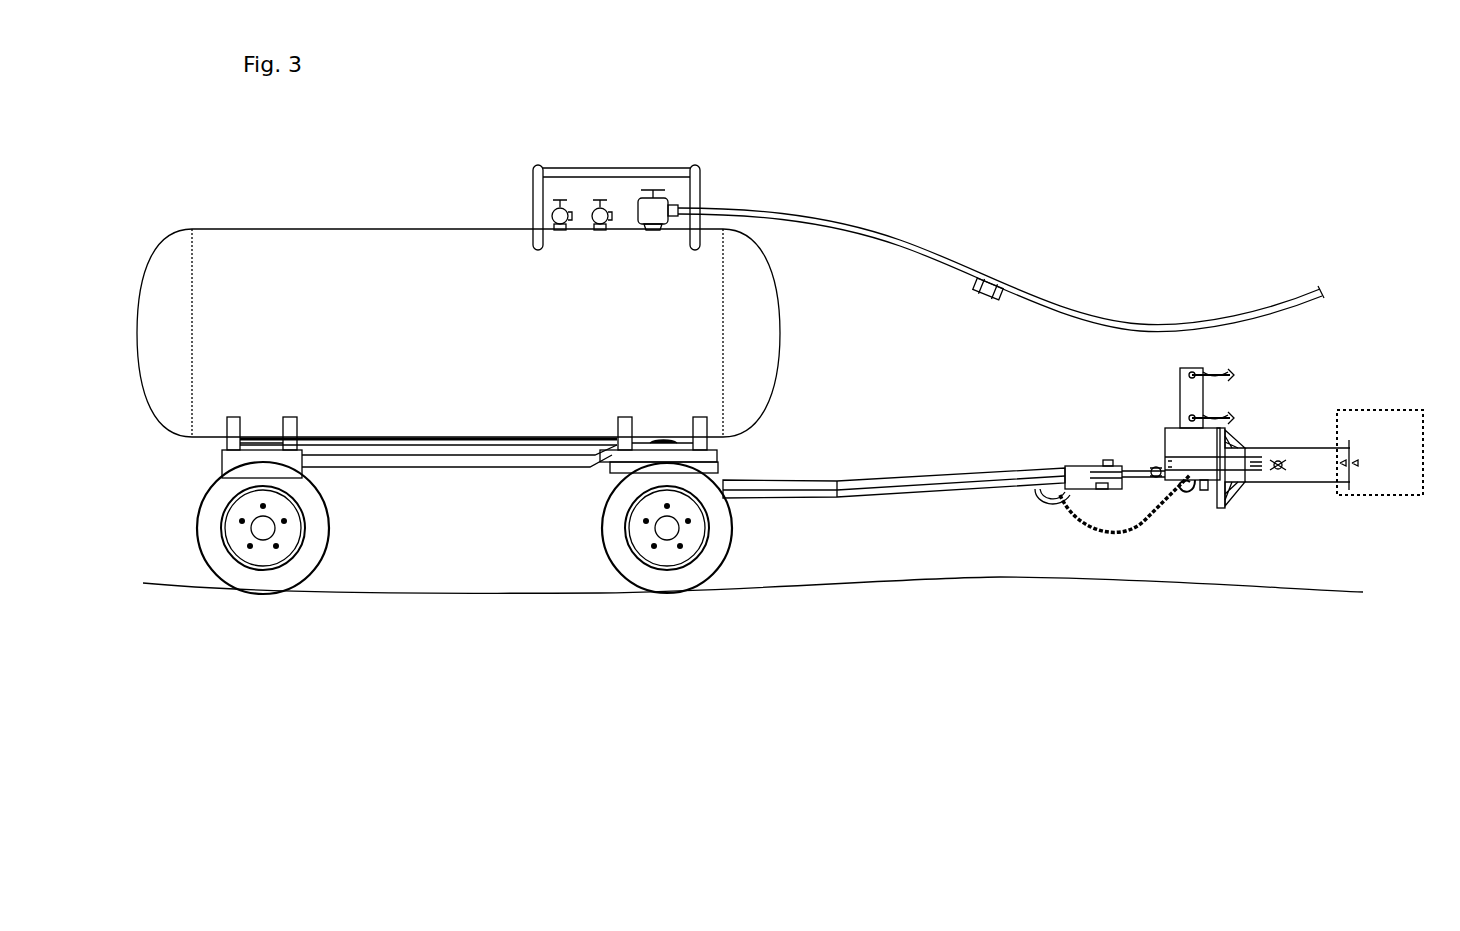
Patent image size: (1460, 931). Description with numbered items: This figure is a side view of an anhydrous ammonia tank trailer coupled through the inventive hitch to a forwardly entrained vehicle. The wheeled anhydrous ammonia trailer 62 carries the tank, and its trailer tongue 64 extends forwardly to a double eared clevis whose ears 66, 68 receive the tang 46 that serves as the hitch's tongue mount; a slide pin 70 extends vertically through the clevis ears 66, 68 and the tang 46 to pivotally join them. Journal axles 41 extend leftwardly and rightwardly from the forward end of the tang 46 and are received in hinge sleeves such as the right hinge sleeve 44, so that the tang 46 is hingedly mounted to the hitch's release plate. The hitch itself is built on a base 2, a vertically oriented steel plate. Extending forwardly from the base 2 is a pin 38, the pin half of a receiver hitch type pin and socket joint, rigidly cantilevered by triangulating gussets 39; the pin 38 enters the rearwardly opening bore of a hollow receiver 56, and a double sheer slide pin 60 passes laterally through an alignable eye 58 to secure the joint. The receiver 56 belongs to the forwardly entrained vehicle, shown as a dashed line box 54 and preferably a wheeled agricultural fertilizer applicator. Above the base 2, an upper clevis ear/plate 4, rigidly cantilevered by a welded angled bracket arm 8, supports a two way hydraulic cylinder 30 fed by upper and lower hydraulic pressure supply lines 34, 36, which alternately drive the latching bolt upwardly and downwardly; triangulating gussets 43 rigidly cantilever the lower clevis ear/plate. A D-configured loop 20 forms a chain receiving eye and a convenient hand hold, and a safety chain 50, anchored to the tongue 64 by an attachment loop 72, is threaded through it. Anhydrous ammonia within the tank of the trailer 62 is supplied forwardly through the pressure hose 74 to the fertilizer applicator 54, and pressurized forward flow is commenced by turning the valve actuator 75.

The base 2 is at (1225, 500).
The upper clevis ear/plate 4 is at (1172, 458).
The angled bracket arm 8 is at (1178, 438).
The loop 20 is at (1195, 492).
The two way hydraulic cylinder 30 is at (1180, 384).
The upper hydraulic pressure supply line 34 is at (1210, 375).
The lower hydraulic pressure supply line 36 is at (1210, 418).
The pin 38 is at (1235, 450).
The triangulating gussets 39 is at (1232, 445).
The journal axles 41 is at (1153, 476).
The triangulating gussets 43 is at (1205, 485).
The right hinge sleeve 44 is at (1154, 465).
The tang 46 is at (1128, 463).
The safety chain 50 is at (1107, 530).
The forwardly entrained vehicle 54 is at (1378, 418).
The receiver 56 is at (1315, 475).
The eye 58 is at (1268, 472).
The double sheer slide pin 60 is at (1280, 462).
The wheeled anhydrous ammonia trailer 62 is at (411, 214).
The trailer tongue 64 is at (916, 483).
The clevis ear 66 is at (1105, 463).
The clevis ear 68 is at (1106, 488).
The slide pin 70 is at (1106, 458).
The attachment loop 72 is at (1040, 498).
The pressure hose 74 is at (940, 258).
The valve actuator 75 is at (645, 190).